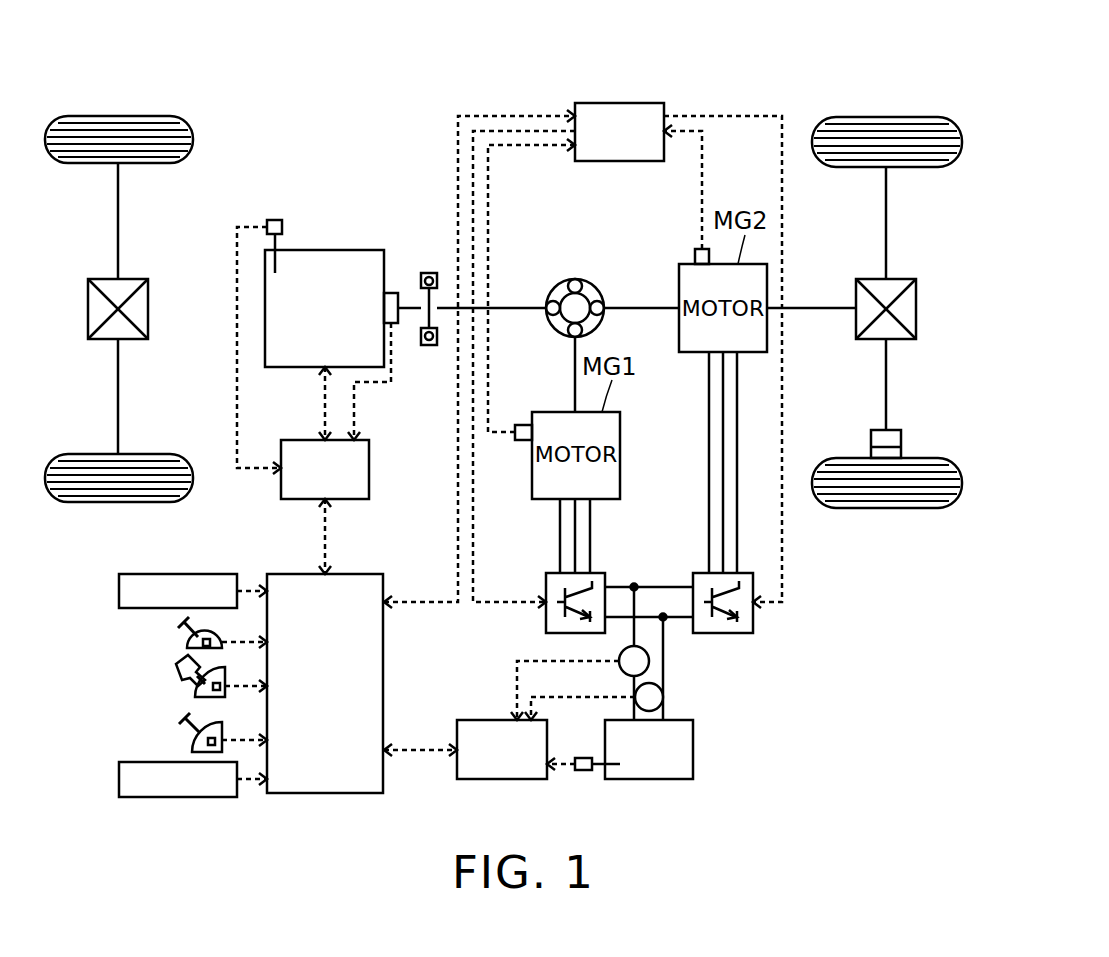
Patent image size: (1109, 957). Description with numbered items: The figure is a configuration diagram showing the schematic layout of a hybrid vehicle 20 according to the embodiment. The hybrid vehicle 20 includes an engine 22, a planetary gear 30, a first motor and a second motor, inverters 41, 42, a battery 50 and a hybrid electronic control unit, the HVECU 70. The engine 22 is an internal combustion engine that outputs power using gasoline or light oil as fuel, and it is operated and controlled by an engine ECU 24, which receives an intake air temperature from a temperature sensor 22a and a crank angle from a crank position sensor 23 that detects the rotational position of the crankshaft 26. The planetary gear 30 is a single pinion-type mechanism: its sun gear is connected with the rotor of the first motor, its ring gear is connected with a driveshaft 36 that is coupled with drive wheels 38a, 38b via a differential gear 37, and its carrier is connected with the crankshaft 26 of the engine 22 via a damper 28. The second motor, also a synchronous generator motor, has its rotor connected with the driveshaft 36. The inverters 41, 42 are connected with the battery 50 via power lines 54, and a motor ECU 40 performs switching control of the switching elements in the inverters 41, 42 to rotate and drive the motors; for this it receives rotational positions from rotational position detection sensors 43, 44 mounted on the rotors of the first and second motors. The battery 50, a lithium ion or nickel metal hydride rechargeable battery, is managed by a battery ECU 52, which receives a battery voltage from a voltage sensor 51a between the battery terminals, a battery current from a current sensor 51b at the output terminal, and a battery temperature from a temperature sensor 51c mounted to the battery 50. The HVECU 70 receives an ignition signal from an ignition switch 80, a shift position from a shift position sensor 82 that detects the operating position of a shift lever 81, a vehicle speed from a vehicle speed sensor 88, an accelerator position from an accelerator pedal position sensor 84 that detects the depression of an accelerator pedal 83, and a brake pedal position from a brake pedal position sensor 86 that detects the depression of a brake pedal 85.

The hybrid vehicle 20 is at (766, 70).
The engine 22 is at (340, 250).
The temperature sensor 22a is at (276, 218).
The crank position sensor 23 is at (398, 326).
The engine ECU 24 is at (290, 440).
The crankshaft 26 is at (409, 298).
The damper 28 is at (430, 272).
The planetary gear 30 is at (575, 279).
The driveshaft 36 is at (820, 306).
The differential gear 37 is at (898, 279).
The drive wheel 38a is at (886, 117).
The drive wheel 38b is at (886, 509).
The motor ECU 40 is at (633, 103).
The inverter 41 is at (600, 573).
The inverter 42 is at (748, 573).
The rotational position detection sensor 43 is at (523, 425).
The rotational position detection sensor 44 is at (697, 249).
The battery 50 is at (693, 748).
The voltage sensor 51a is at (663, 697).
The current sensor 51b is at (649, 661).
The temperature sensor 51c is at (583, 771).
The battery ECU 52 is at (487, 720).
The power lines 54 is at (656, 615).
The HVECU 70 is at (355, 574).
The ignition switch 80 is at (119, 586).
The shift lever 81 is at (183, 632).
The shift position sensor 82 is at (187, 641).
The accelerator pedal 83 is at (178, 673).
The accelerator pedal position sensor 84 is at (200, 688).
The brake pedal 85 is at (185, 727).
The brake pedal position sensor 86 is at (200, 741).
The vehicle speed sensor 88 is at (119, 776).